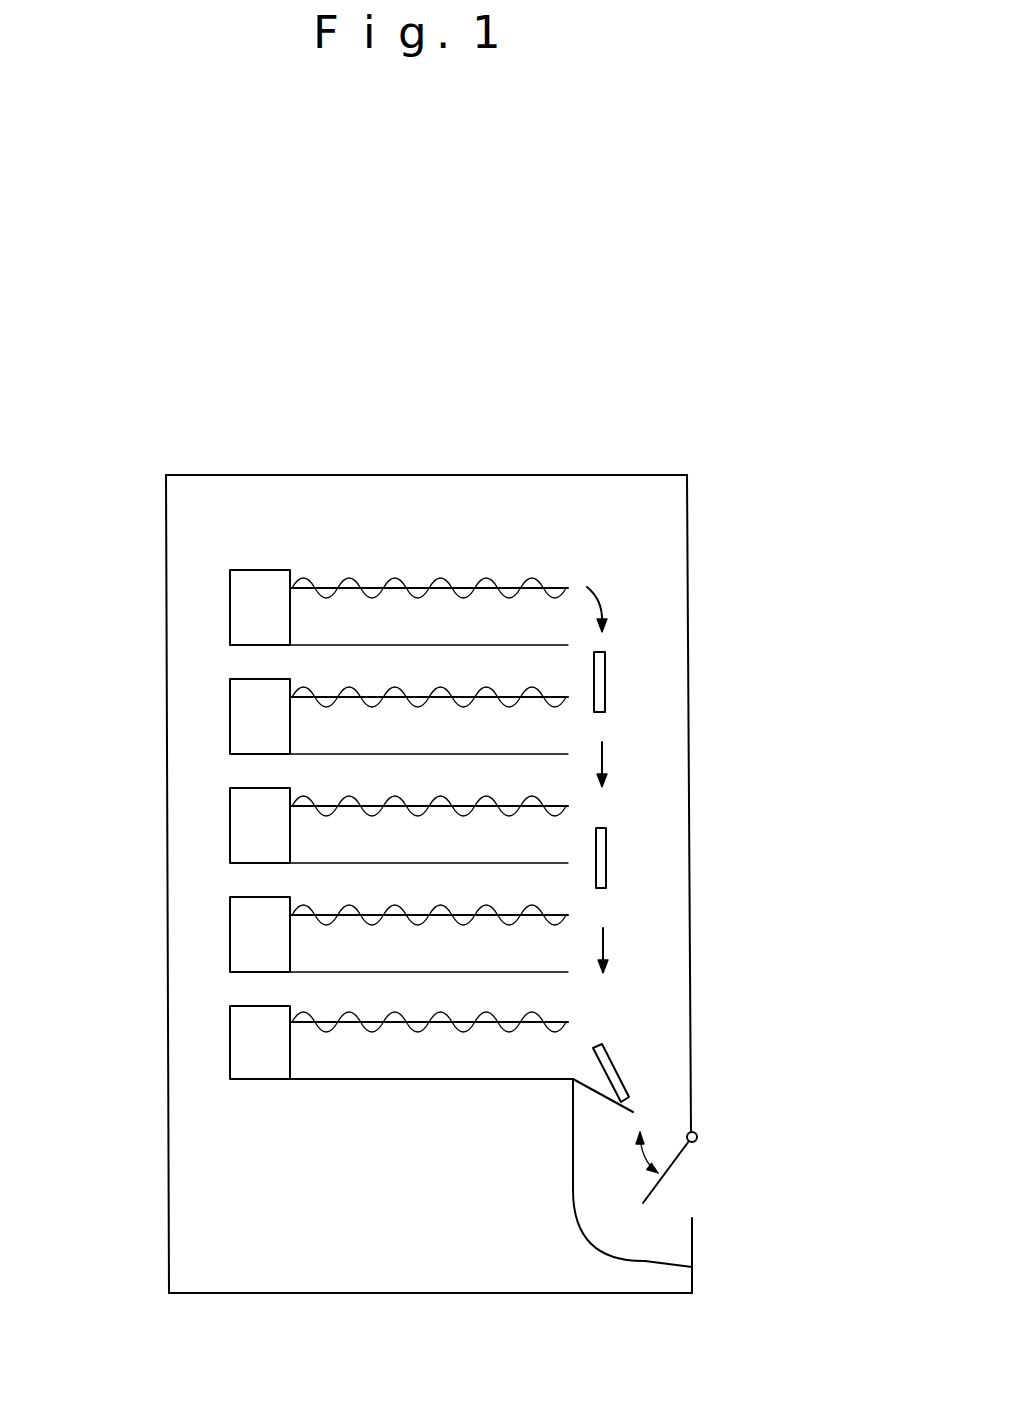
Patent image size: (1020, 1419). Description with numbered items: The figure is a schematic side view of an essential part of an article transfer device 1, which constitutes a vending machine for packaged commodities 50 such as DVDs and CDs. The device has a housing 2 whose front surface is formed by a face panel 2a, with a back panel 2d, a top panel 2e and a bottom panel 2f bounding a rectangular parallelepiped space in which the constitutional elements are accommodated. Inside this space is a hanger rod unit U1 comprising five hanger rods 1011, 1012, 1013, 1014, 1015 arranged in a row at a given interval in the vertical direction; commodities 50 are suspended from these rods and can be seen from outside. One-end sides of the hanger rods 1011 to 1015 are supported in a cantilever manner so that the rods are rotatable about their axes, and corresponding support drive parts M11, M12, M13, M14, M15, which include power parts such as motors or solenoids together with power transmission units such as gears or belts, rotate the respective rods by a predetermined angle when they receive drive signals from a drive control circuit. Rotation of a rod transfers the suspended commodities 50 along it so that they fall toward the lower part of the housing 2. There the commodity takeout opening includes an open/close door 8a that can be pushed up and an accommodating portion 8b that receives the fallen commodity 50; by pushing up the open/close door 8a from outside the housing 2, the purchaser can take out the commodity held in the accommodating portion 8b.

The article transfer device 1 is at (135, 390).
The housing 2 is at (166, 748).
The face panel 2a is at (688, 536).
The back panel 2d is at (166, 1081).
The top panel 2e is at (215, 475).
The bottom panel 2f is at (425, 1295).
The hanger rod unit U1 is at (680, 381).
The hanger rod 1011 is at (303, 573).
The hanger rod 1012 is at (366, 685).
The hanger rod 1013 is at (398, 798).
The hanger rod 1014 is at (442, 906).
The hanger rod 1015 is at (531, 1014).
The support drive part M11 is at (238, 610).
The support drive part M12 is at (238, 719).
The support drive part M13 is at (238, 828).
The support drive part M14 is at (238, 937).
The support drive part M15 is at (238, 1046).
The commodity 50 is at (605, 685).
The open/close door 8a is at (680, 1165).
The accommodating portion 8b is at (647, 1258).